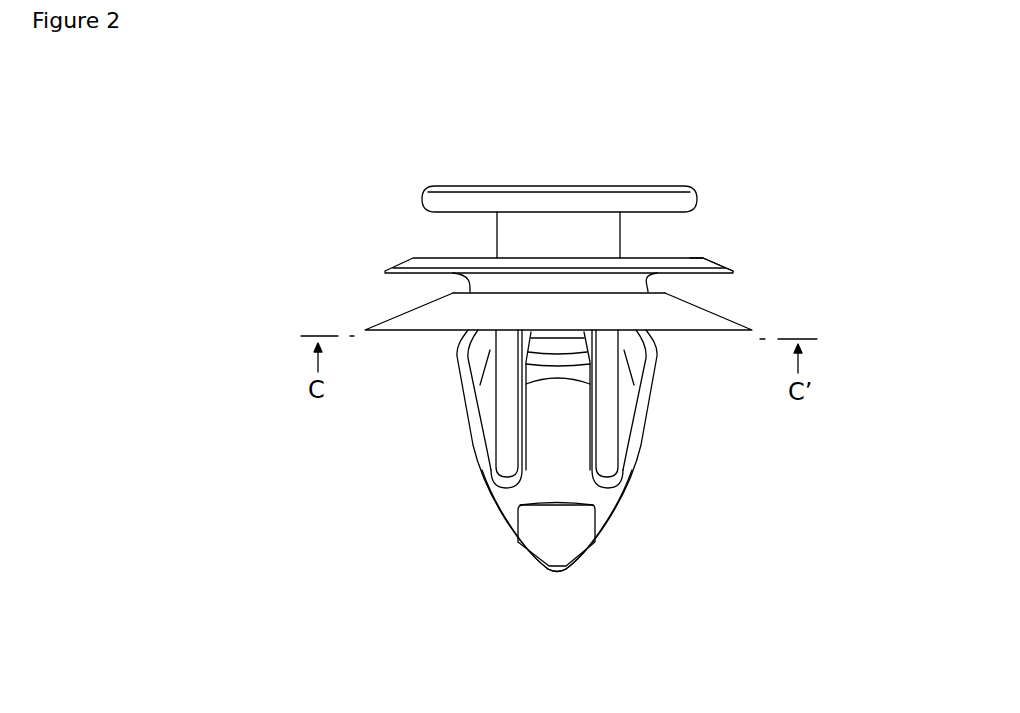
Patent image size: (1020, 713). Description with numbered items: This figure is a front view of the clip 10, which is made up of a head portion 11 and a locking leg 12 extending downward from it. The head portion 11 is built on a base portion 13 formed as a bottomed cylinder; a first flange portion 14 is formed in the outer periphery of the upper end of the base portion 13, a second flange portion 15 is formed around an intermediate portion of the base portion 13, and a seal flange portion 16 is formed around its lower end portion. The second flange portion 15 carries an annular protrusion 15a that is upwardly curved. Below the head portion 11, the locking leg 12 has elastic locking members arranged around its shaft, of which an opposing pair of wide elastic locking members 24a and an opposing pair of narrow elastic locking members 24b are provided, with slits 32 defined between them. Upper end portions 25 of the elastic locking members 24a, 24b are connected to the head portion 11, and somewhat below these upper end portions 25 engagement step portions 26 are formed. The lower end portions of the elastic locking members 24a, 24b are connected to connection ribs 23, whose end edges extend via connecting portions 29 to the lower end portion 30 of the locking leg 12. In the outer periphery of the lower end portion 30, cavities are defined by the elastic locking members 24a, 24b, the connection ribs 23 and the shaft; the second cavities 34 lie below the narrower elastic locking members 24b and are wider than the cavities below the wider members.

The clip 10 is at (713, 167).
The head portion 11 is at (785, 310).
The locking leg 12 is at (676, 518).
The base portion 13 is at (497, 240).
The first flange portion 14 is at (437, 201).
The second flange portion 15 is at (398, 263).
The annular protrusion 15a is at (690, 256).
The seal flange portion 16 is at (410, 307).
The connection rib 23 is at (533, 528).
The elastic locking member 24a is at (482, 457).
The elastic locking member 24b is at (547, 450).
The upper end portion 25 is at (545, 346).
The engagement step portion 26 is at (568, 360).
The connecting portion 29 is at (508, 519).
The lower end portion 30 is at (557, 574).
The slit 32 is at (502, 421).
The second cavity 34 is at (548, 537).